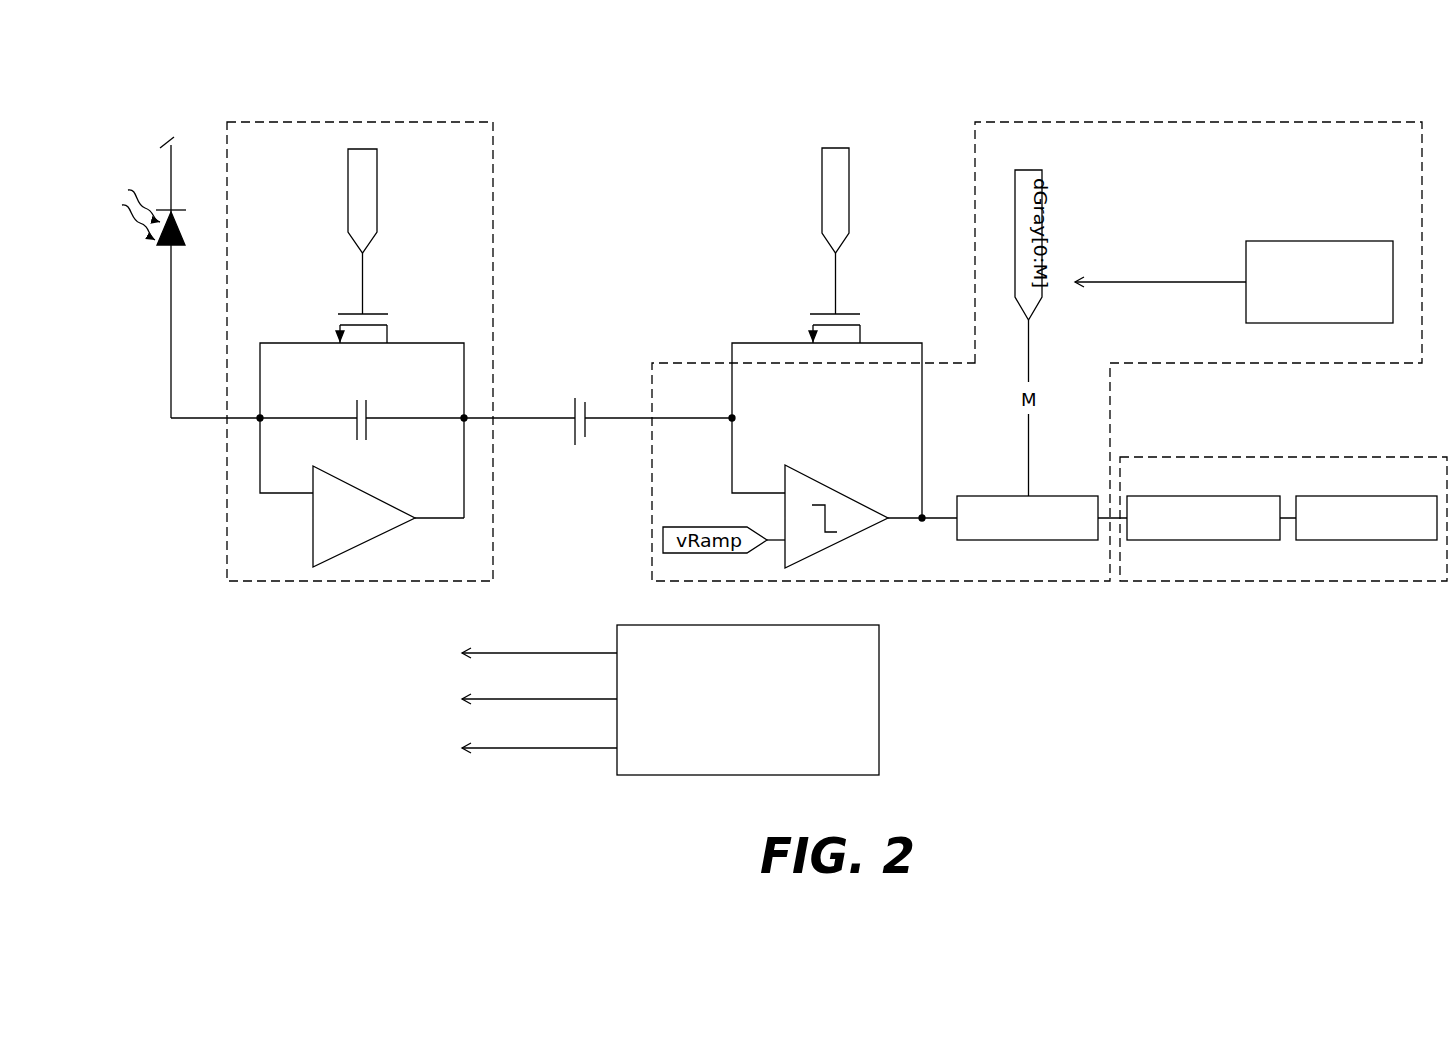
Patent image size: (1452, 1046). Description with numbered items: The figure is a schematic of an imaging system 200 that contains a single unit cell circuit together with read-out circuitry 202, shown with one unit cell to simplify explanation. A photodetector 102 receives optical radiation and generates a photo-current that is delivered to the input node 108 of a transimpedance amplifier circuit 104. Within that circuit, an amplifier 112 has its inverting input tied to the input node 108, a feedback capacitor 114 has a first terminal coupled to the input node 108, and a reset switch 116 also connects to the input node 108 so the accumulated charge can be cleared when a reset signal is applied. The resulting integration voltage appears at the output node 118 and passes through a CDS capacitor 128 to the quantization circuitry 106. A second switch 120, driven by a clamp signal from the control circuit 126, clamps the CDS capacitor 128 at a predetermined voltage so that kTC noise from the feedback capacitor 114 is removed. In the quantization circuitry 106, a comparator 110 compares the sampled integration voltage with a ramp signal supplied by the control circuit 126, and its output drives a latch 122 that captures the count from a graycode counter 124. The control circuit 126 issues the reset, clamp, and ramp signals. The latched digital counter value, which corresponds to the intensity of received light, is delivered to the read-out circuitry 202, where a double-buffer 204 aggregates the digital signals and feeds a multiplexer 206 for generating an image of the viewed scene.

The photodetector 102 is at (187, 217).
The transimpedance amplifier circuit 104 is at (328, 120).
The quantization circuitry 106 is at (1073, 118).
The input node 108 is at (260, 420).
The comparator 110 is at (857, 537).
The amplifier 112 is at (328, 560).
The feedback capacitor 114 is at (354, 408).
The reset switch 116 is at (370, 313).
The output node 118 is at (466, 420).
The second switch 120 is at (823, 315).
The latch 122 is at (1042, 540).
The graycode counter 124 is at (1330, 240).
The control circuit 126 is at (880, 715).
The CDS capacitor 128 is at (575, 410).
The imaging system 200 is at (633, 128).
The read-out circuitry 202 is at (1142, 455).
The double-buffer 204 is at (1165, 540).
The multiplexer 206 is at (1320, 540).